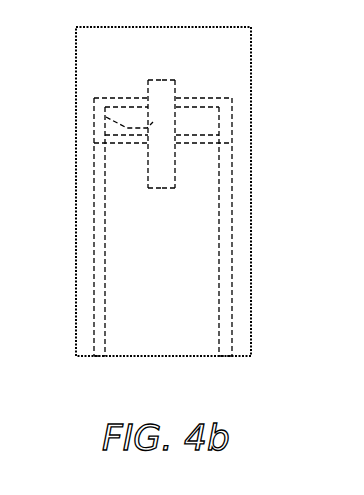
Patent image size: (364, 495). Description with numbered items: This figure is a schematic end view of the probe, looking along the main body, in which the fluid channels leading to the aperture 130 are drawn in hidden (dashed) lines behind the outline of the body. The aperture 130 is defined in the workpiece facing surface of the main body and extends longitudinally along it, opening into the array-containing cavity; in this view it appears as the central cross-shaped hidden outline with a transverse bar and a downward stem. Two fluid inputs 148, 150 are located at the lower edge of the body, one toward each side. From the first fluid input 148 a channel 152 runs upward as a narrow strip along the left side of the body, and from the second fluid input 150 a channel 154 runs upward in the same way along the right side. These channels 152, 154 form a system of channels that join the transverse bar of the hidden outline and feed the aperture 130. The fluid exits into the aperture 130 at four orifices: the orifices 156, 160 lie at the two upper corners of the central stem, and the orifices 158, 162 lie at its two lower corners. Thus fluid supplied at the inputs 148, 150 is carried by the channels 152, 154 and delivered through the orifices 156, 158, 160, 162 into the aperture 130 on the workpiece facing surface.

The aperture 130 is at (106, 117).
The fluid input 148 is at (100, 357).
The fluid input 150 is at (228, 357).
The channel 152 is at (95, 280).
The channel 154 is at (232, 277).
The orifice 156 is at (150, 84).
The orifice 158 is at (150, 185).
The orifice 160 is at (173, 85).
The orifice 162 is at (174, 184).